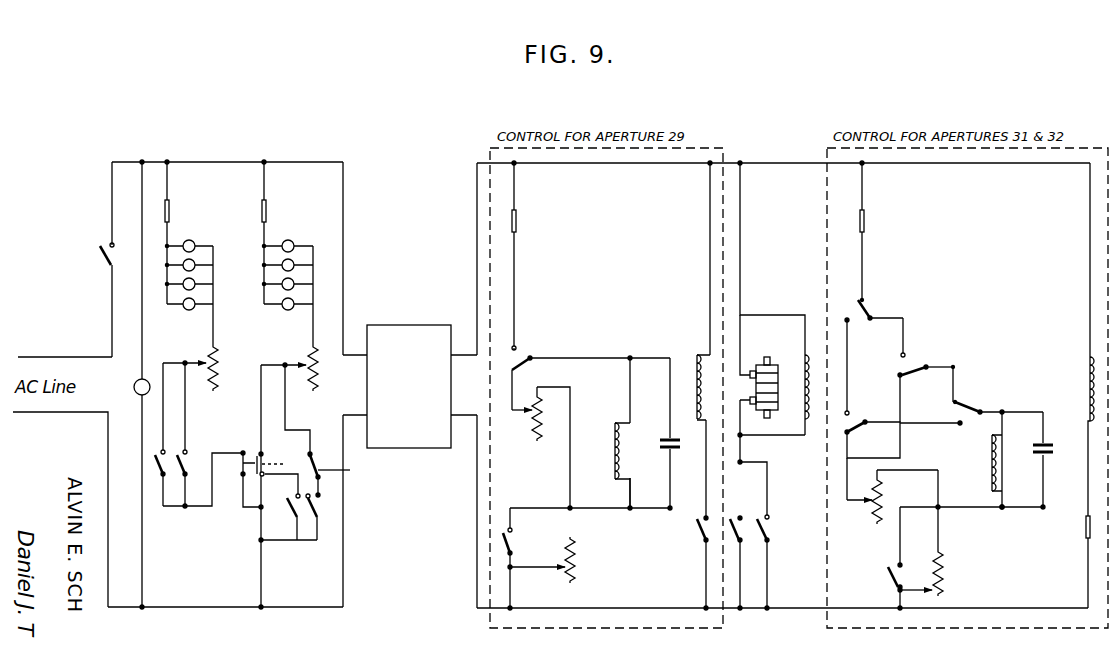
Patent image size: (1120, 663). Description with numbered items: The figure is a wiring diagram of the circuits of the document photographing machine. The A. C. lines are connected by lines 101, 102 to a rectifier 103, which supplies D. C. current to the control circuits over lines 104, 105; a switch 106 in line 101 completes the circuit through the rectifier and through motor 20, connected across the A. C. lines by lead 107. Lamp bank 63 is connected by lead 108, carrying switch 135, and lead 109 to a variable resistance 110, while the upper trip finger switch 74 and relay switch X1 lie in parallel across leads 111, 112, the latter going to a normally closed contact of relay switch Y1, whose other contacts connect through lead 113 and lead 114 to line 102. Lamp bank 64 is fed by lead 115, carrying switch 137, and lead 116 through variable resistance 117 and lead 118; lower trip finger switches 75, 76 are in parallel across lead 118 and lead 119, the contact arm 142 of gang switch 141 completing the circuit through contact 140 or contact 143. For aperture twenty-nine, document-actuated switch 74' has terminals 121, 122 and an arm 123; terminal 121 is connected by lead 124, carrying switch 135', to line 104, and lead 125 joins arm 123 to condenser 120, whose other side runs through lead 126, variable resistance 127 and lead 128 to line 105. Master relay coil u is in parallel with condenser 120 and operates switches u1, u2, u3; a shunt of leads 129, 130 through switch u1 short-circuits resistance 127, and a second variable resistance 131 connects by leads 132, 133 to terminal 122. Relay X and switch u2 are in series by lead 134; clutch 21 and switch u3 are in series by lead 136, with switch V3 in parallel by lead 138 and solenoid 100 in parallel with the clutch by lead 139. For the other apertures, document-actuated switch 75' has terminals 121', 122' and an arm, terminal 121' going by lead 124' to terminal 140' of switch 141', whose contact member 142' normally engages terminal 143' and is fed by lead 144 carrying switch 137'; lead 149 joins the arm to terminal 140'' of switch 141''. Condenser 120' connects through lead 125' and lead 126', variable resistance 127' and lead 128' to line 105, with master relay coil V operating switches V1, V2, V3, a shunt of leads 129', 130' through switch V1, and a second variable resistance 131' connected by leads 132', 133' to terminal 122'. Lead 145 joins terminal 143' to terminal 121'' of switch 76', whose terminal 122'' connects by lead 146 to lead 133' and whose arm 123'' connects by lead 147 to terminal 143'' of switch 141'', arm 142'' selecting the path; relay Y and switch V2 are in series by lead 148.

The line 101 is at (225, 156).
The line 102 is at (213, 608).
The rectifier 103 is at (400, 330).
The line 104 is at (785, 163).
The line 105 is at (772, 610).
The switch 106 is at (104, 257).
The lead 107 is at (142, 327).
The lead 108 is at (168, 182).
The lead 109 is at (214, 323).
The variable resistance 110 is at (218, 372).
The lead 111 is at (178, 362).
The lead 112 is at (177, 508).
The lead 113 is at (248, 507).
The lead 114 is at (260, 573).
The lead 115 is at (266, 180).
The lead 116 is at (312, 325).
The variable resistance 117 is at (318, 378).
The lead 118 is at (276, 365).
The lead 119 is at (280, 542).
The condenser 120 is at (658, 433).
The terminal 121 is at (539, 326).
The terminal 122 is at (486, 389).
The arm 123 is at (598, 370).
The lead 124 is at (540, 256).
The lead 125 is at (617, 418).
The lead 126 is at (632, 510).
The variable resistance 127 is at (593, 560).
The lead 128 is at (534, 579).
The lead 129 is at (536, 557).
The lead 130 is at (591, 504).
The second variable resistance 131 is at (554, 424).
The lead 132 is at (578, 448).
The lead 133 is at (517, 425).
The lead 134 is at (708, 255).
The switch 135 is at (193, 208).
The lead 136 is at (742, 258).
The switch 137 is at (290, 208).
The lead 138 is at (768, 500).
The lead 139 is at (795, 308).
The contact 140 is at (281, 485).
The switch 141 is at (292, 450).
The contact arm 142 is at (322, 452).
The contact 143 is at (352, 476).
The motor 20 is at (134, 383).
The clutch 21 is at (773, 365).
The lamp bank 63 is at (196, 241).
The lamp bank 64 is at (292, 241).
The upper trip finger switch 74 is at (156, 492).
The lower trip finger switch 75 is at (282, 519).
The lower trip finger switch 76 is at (342, 513).
The solenoid 100 is at (805, 417).
The relay switch X1 is at (183, 458).
The relay switch Y1 is at (245, 453).
The relay X is at (696, 355).
The relay Y is at (1086, 367).
The master relay coil u is at (612, 444).
The master relay coil V is at (989, 441).
The switch u1 is at (516, 535).
The switch u2 is at (688, 514).
The switch u3 is at (730, 535).
The switch V1 is at (887, 572).
The switch V2 is at (1083, 530).
The switch V3 is at (770, 530).
The document-actuated switch 74' is at (540, 348).
The document-actuated switch 75' is at (870, 414).
The switch 76' is at (926, 360).
The switch 135' is at (538, 218).
The switch 137' is at (890, 213).
The condenser 120' is at (1032, 459).
The terminal 121' is at (869, 392).
The terminal 121'' is at (934, 352).
The terminal 122' is at (873, 440).
The terminal 122'' is at (927, 398).
The switch arm 123'' is at (934, 379).
The lead 124' is at (873, 350).
The lead 125' is at (1032, 399).
The lead 126' is at (1014, 522).
The variable resistance 127' is at (967, 573).
The lead 128' is at (941, 598).
The lead 129' is at (893, 599).
The lead 130' is at (971, 536).
The second variable resistance 131' is at (863, 512).
The lead 132' is at (961, 510).
The lead 133' is at (858, 493).
The terminal 140' is at (872, 332).
The terminal 140'' is at (940, 446).
The switch 141' is at (904, 292).
The switch 141'' is at (993, 387).
The contact member 142' is at (885, 287).
The arm 142'' is at (996, 398).
The terminal 143' is at (903, 306).
The terminal 143'' is at (986, 376).
The lead 144 is at (864, 248).
The lead 145 is at (905, 330).
The lead 146 is at (895, 473).
The lead 147 is at (955, 370).
The lead 148 is at (1089, 262).
The lead 149 is at (918, 424).